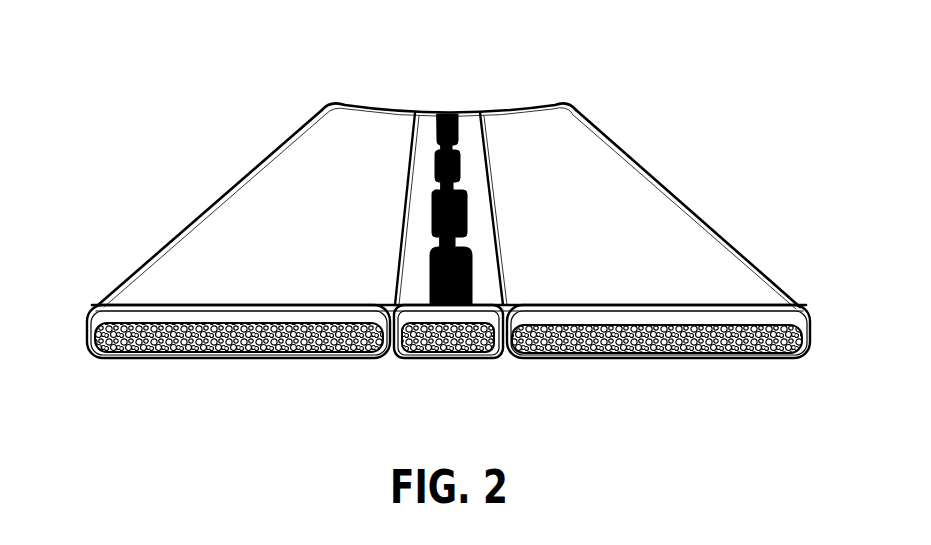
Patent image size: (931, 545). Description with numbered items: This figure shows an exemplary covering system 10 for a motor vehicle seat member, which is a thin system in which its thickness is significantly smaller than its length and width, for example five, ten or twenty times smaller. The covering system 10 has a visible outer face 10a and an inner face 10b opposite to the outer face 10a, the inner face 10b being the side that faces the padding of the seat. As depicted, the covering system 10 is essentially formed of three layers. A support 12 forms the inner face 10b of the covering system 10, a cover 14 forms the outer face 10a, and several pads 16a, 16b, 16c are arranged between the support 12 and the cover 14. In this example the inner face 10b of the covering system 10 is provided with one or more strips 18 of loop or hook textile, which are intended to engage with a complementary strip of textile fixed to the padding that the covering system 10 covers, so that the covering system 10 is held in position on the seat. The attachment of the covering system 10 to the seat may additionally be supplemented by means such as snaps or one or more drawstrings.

The covering system 10 is at (178, 169).
The outer face 10a is at (596, 379).
The inner face 10b is at (540, 126).
The support 12 is at (287, 193).
The cover 14 is at (243, 358).
The pad 16a is at (472, 362).
The pad 16b is at (290, 357).
The pad 16c is at (678, 355).
The strip of loop or hook textile 18 is at (442, 152).